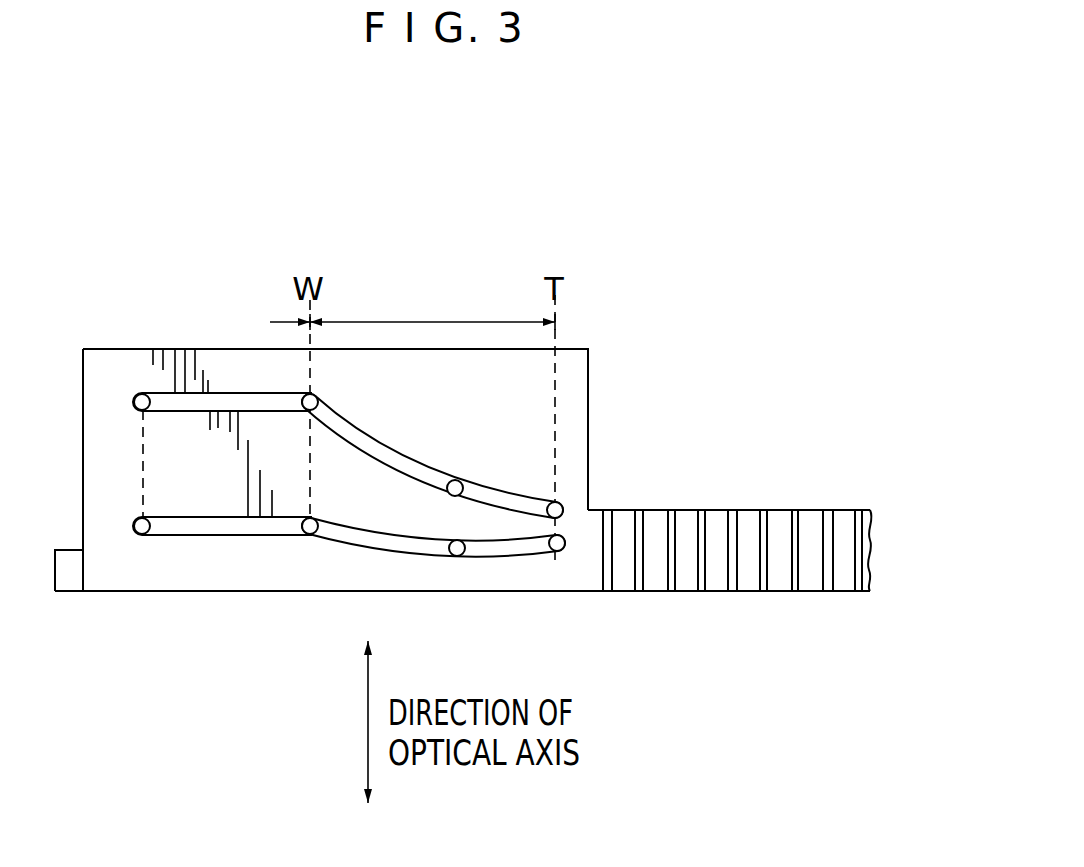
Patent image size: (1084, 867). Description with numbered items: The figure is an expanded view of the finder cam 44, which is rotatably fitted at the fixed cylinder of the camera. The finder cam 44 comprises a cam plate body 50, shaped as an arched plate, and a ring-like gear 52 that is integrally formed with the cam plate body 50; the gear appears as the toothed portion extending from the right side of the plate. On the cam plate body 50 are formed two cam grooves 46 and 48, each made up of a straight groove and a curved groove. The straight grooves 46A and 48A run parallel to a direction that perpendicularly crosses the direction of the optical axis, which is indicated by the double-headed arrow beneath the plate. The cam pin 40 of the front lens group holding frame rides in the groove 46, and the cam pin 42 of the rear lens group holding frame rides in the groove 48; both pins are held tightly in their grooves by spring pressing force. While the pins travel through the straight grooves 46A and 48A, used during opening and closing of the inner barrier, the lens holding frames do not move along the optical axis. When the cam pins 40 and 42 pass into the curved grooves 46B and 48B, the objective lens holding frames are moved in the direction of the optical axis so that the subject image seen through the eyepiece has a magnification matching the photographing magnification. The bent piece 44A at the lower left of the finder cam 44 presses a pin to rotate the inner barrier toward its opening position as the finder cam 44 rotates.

The cam pin 40 is at (148, 528).
The cam pin 42 is at (150, 404).
The finder cam 44 is at (462, 407).
The bent piece 44A is at (70, 582).
The cam groove 46 is at (345, 549).
The straight groove 46A is at (232, 535).
The curved groove 46B is at (412, 556).
The cam groove 48 is at (344, 406).
The straight groove 48A is at (232, 393).
The curved groove 48B is at (446, 482).
The cam plate body 50 is at (583, 413).
The ring-like gear 52 is at (780, 527).